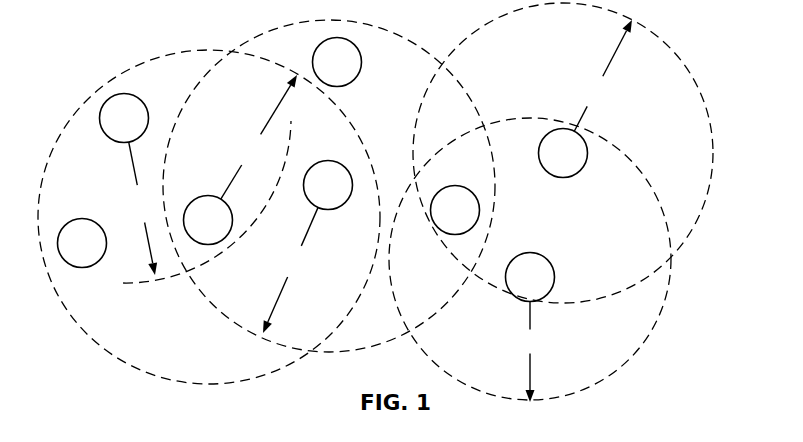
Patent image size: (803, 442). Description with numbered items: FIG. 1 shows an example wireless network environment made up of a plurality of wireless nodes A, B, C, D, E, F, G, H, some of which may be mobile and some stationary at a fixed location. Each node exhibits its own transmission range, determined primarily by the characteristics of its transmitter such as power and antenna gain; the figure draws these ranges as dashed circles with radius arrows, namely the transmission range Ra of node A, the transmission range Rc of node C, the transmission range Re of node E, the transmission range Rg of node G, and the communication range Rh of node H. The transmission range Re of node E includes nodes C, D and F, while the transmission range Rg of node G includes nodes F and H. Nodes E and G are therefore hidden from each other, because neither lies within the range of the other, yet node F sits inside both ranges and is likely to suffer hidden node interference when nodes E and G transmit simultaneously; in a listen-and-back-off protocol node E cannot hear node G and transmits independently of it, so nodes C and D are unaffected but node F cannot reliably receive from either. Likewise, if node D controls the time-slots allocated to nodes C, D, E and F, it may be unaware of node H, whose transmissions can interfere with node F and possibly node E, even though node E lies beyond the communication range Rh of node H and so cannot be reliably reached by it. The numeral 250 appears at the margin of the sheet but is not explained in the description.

The communication node / network device 250 is at (142, 441).
The wireless node A is at (124, 118).
The wireless node B is at (82, 243).
The wireless node C is at (208, 220).
The wireless node D is at (337, 62).
The wireless node E is at (328, 185).
The wireless node F is at (455, 210).
The wireless node G is at (563, 153).
The wireless node H is at (530, 277).
The transmission range of node A Ra is at (142, 208).
The transmission range of node C Rc is at (259, 137).
The transmission range of node E Re is at (290, 270).
The transmission range of node G Rg is at (603, 75).
The communication range of node H Rh is at (530, 352).